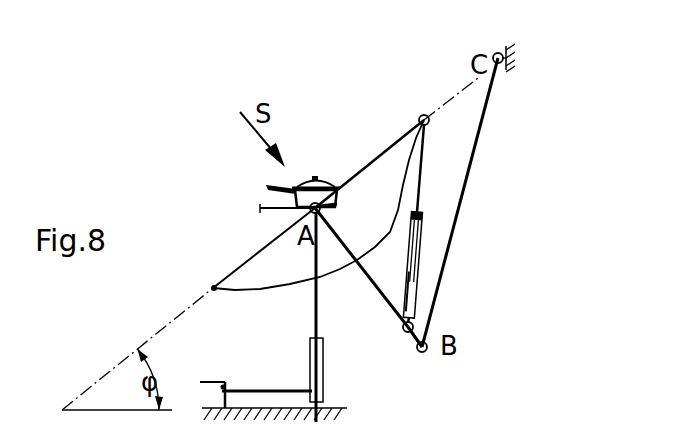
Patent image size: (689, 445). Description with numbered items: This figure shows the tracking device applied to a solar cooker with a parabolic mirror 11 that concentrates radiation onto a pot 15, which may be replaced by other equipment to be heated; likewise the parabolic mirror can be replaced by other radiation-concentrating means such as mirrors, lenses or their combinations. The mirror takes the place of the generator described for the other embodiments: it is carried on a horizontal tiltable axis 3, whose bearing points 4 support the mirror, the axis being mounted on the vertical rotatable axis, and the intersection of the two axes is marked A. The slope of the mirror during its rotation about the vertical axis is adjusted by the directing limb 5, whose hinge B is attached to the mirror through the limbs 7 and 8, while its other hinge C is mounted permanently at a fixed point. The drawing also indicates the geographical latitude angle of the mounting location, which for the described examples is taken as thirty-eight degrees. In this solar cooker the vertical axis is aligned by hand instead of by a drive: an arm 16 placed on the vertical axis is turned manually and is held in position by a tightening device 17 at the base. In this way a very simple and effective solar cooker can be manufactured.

The horizontal tiltable axis 3 is at (323, 206).
The bearing points 4 is at (462, 173).
The directing limb 5 is at (455, 242).
The limb 7 is at (435, 333).
The limb 8 is at (417, 268).
The parabolic reflector 11 is at (288, 283).
The pot 15 is at (317, 195).
The arm 16 is at (280, 390).
The tightening device 17 is at (221, 381).